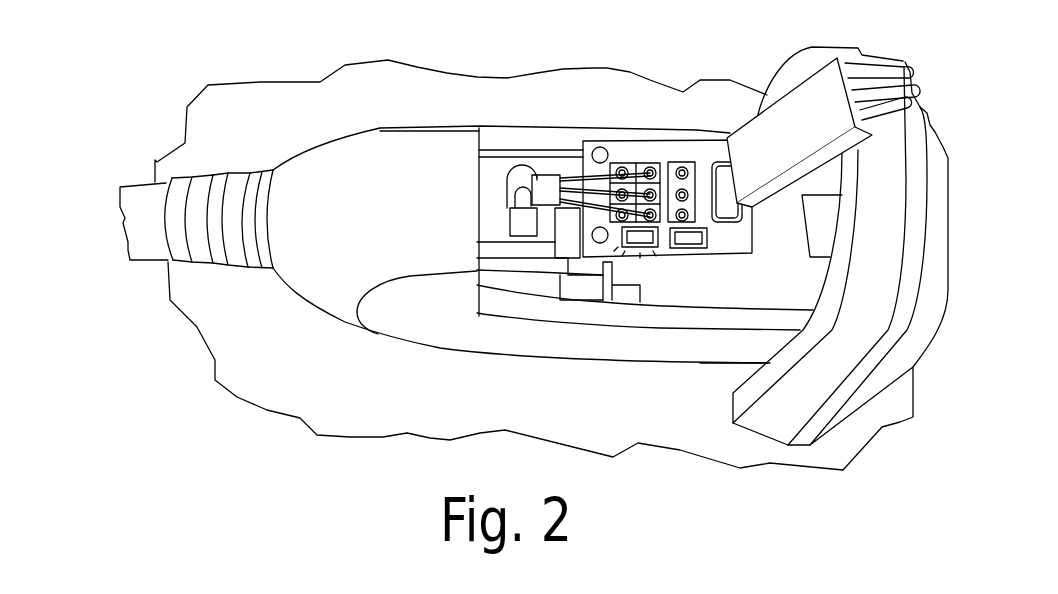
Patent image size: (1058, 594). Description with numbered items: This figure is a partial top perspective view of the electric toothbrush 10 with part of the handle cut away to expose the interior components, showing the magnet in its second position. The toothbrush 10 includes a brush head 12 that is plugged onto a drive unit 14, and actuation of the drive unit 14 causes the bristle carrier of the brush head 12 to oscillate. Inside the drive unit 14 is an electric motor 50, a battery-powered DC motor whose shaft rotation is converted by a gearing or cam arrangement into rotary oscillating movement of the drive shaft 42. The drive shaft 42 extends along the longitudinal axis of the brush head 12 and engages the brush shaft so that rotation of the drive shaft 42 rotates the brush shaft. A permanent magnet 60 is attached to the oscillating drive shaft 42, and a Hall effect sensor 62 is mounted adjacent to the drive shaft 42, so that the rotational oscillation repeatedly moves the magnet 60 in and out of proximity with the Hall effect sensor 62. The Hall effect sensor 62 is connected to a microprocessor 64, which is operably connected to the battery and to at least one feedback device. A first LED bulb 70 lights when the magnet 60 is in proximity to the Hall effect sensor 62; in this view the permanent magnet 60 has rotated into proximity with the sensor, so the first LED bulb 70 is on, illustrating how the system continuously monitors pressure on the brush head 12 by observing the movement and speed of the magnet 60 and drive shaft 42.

The electric toothbrush 10 is at (145, 108).
The brush head 12 is at (170, 240).
The drive unit 14 is at (775, 320).
The drive shaft 42 is at (509, 232).
The electric motor 50 is at (623, 275).
The permanent magnet 60 is at (525, 221).
The Hall effect sensor 62 is at (552, 204).
The microprocessor 64 is at (730, 243).
The first LED bulb 70 is at (638, 246).